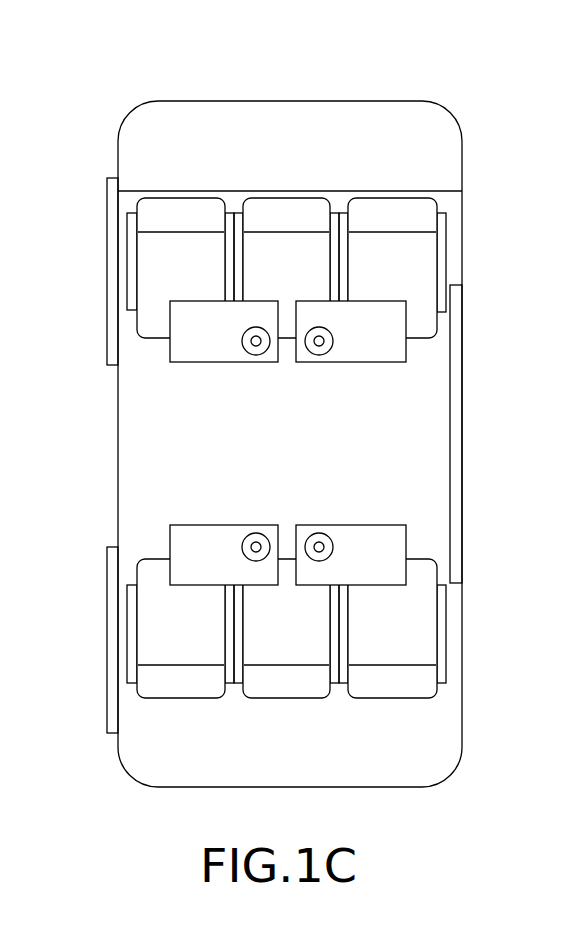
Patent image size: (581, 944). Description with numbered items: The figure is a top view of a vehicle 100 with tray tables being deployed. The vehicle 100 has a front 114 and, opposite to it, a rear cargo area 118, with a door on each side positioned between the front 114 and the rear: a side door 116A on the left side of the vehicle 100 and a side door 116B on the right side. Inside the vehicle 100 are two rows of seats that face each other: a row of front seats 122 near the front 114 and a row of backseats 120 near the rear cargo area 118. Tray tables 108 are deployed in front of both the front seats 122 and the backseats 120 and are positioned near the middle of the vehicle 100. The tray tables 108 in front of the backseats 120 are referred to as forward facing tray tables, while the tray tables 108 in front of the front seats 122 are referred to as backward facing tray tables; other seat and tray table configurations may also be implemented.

The vehicle 100 is at (515, 118).
The tray tables 108 is at (362, 357).
The front 114 is at (307, 90).
The side door 116A is at (108, 307).
The side door 116B is at (458, 305).
The rear cargo area 118 is at (310, 742).
The backseats 120 is at (286, 628).
The front seats 122 is at (443, 243).